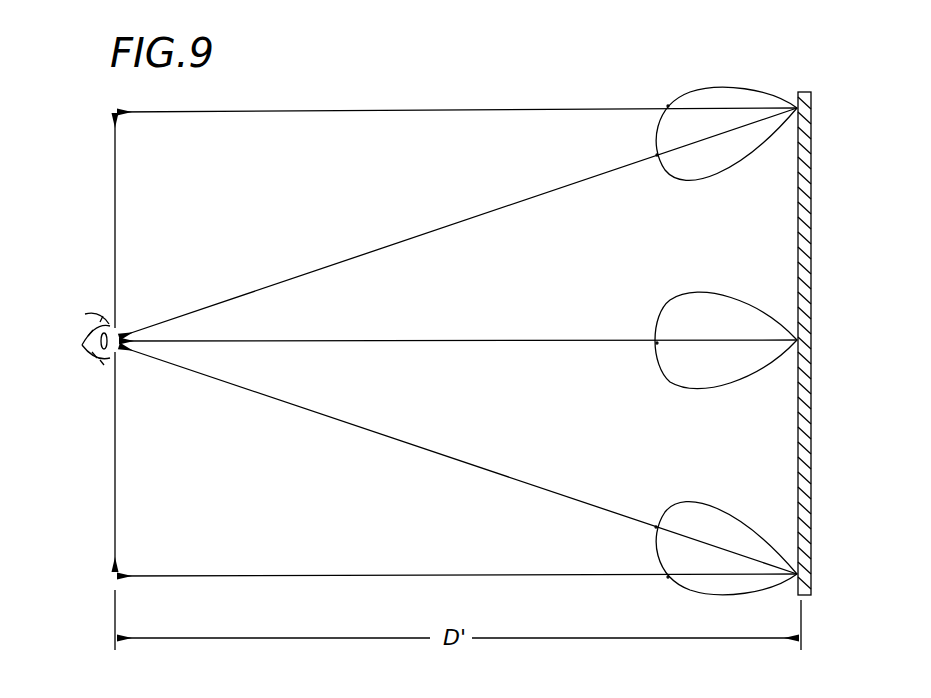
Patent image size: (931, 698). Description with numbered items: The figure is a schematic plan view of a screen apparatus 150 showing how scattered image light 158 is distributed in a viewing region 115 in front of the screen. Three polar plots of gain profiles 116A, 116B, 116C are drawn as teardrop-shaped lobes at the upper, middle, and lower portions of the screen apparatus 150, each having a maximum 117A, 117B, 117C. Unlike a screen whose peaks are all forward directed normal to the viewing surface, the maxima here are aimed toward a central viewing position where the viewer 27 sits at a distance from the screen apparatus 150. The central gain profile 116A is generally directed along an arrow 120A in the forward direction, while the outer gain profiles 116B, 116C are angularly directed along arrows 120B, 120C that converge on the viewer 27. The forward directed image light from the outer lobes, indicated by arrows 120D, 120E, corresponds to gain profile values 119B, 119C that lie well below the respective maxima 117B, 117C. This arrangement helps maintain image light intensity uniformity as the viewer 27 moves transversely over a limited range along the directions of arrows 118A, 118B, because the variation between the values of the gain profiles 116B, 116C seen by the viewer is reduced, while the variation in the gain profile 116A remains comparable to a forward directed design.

The viewer 27 is at (95, 333).
The region 115 is at (347, 92).
The gain profile 116A is at (708, 292).
The gain profile 116B is at (725, 88).
The gain profile 116C is at (712, 493).
The maximum 117A is at (657, 343).
The maximum 117B is at (657, 155).
The maximum 117C is at (656, 527).
The arrow 118A is at (113, 210).
The arrow 118B is at (115, 433).
The gain profile value 119B is at (668, 105).
The gain profile value 119C is at (668, 578).
The arrow 120A is at (443, 338).
The arrow 120B is at (482, 210).
The arrow 120C is at (462, 460).
The arrow 120D is at (432, 108).
The arrow 120E is at (475, 573).
The screen apparatus 150 is at (812, 150).
The scattered image light 158 is at (673, 50).